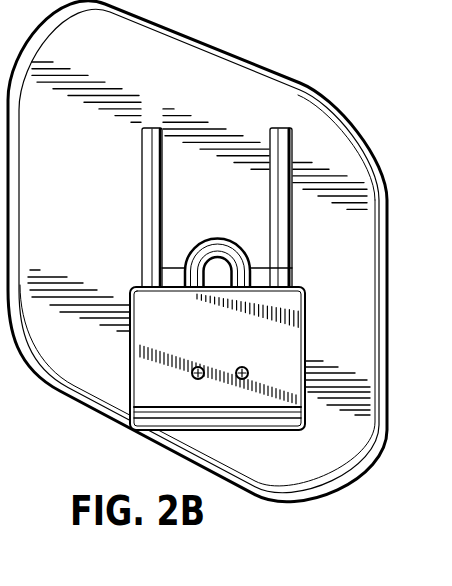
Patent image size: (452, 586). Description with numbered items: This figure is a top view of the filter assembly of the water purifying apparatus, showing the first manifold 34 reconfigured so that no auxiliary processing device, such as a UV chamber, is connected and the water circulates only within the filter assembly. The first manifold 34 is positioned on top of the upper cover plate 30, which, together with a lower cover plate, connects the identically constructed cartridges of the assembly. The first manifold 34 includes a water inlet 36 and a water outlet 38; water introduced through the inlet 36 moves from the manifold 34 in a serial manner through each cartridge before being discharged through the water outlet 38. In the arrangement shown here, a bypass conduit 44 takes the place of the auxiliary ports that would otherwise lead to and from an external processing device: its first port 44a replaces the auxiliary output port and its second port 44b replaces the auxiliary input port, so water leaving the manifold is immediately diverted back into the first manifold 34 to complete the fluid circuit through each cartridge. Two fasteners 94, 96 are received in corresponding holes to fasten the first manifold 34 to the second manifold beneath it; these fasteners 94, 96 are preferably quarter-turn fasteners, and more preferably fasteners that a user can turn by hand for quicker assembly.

The upper cover plate 30 is at (236, 57).
The first manifold 34 is at (132, 384).
The water inlet 36 is at (142, 182).
The water outlet 38 is at (280, 128).
The bypass conduit 44 is at (219, 238).
The first port 44a is at (182, 268).
The second port 44b is at (288, 269).
The fastener 94 is at (200, 367).
The fastener 96 is at (243, 367).